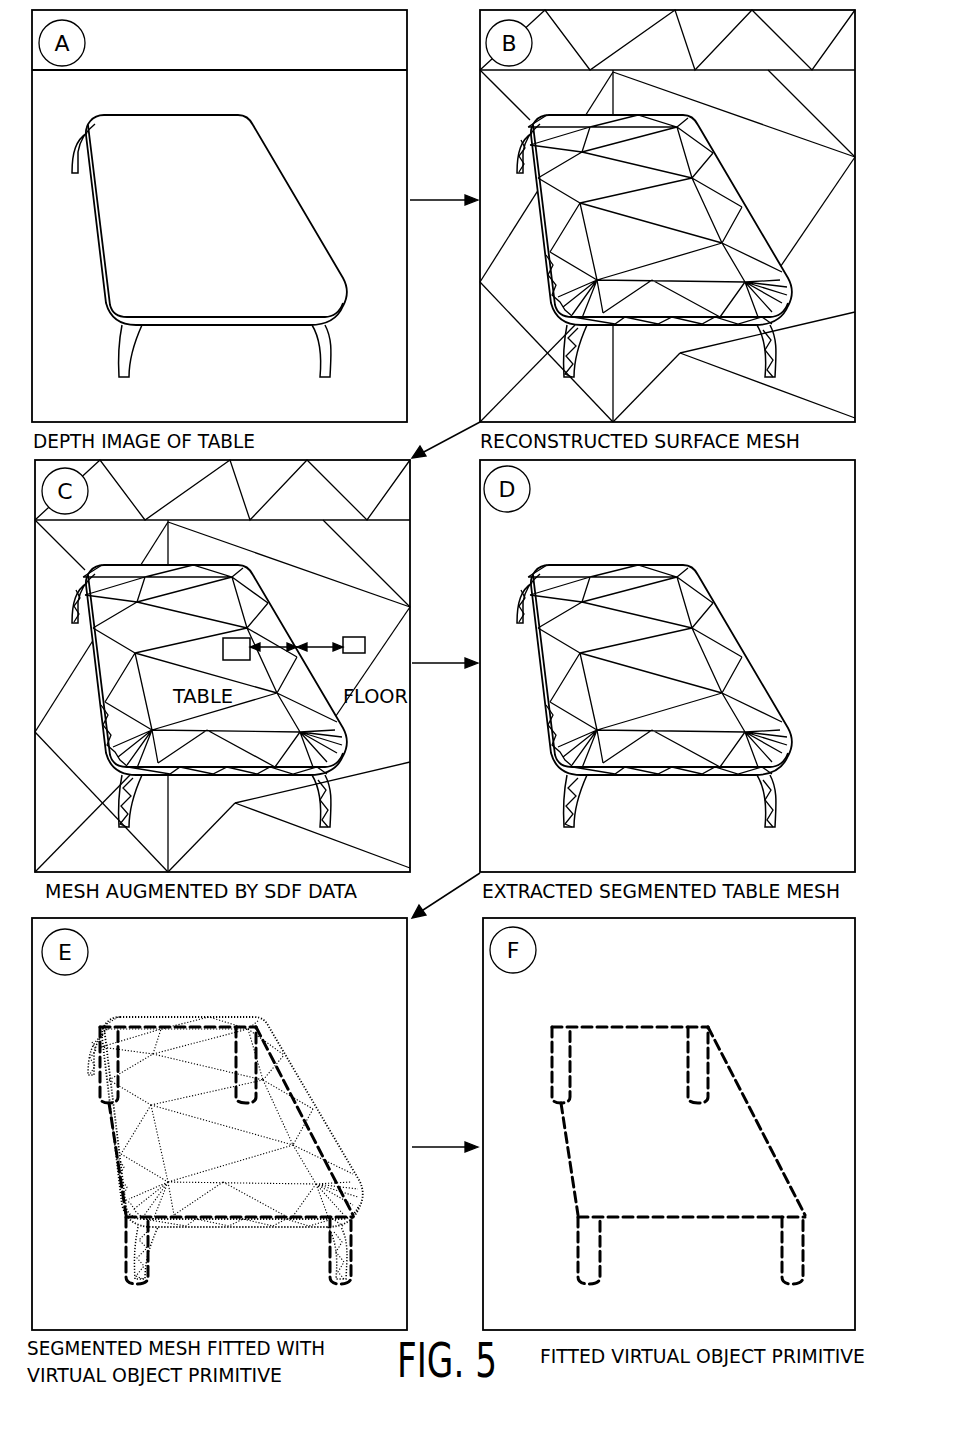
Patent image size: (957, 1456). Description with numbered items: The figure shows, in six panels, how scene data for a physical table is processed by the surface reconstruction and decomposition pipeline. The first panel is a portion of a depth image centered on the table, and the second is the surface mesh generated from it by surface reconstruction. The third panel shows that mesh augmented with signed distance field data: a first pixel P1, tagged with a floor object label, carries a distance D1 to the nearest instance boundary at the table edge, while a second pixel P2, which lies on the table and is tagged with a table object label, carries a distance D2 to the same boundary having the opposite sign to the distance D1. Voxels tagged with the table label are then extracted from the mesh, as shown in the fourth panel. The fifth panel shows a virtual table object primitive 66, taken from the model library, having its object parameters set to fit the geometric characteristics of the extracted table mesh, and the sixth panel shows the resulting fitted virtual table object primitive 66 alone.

The virtual table object primitive 66 is at (282, 1097).
The first pixel P1 is at (350, 637).
The second pixel P2 is at (223, 641).
The distance D1 is at (320, 634).
The distance D2 is at (273, 634).